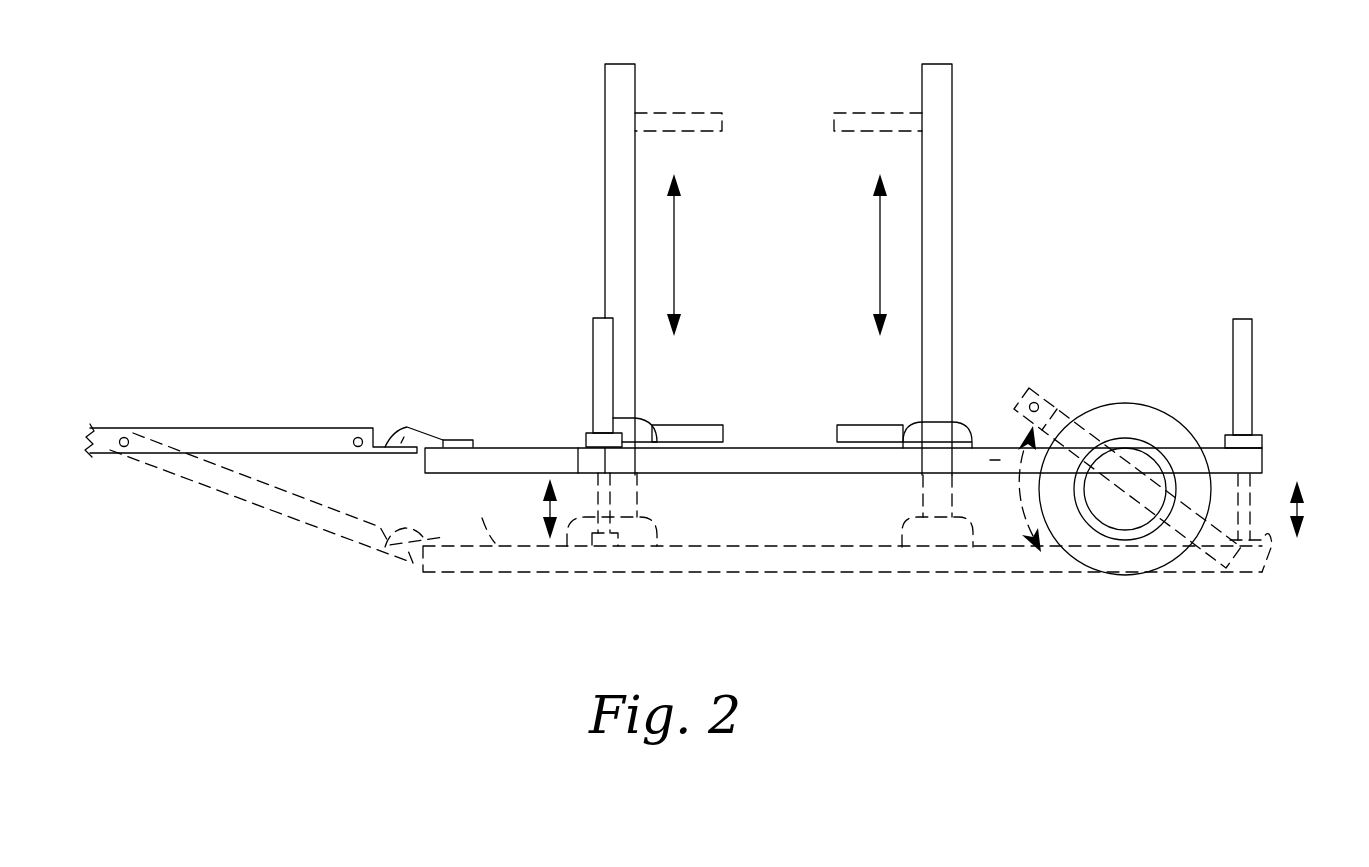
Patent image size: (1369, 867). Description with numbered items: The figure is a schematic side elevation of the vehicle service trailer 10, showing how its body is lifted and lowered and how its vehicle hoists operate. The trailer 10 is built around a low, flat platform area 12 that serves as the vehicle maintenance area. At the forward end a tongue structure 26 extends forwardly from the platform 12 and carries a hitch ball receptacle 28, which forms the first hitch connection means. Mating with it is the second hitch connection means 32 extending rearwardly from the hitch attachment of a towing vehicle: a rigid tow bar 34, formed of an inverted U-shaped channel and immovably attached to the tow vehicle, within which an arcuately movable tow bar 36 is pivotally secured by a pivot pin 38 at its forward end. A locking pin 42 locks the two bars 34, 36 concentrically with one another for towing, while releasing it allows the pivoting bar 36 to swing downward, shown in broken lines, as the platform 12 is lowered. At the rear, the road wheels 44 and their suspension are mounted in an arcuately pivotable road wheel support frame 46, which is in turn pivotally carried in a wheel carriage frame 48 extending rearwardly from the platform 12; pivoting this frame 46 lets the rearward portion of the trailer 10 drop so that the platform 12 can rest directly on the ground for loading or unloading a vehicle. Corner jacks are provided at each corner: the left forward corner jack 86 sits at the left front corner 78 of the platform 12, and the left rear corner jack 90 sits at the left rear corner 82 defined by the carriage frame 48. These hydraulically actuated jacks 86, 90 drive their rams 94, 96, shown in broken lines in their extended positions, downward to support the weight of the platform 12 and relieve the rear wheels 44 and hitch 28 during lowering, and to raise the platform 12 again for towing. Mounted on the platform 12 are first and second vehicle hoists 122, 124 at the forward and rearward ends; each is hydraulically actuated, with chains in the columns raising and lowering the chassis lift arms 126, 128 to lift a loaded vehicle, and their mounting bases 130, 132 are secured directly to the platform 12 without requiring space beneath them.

The trailer 10 is at (903, 616).
The platform area 12 is at (812, 474).
The tongue structure 26 is at (500, 475).
The hitch ball receptacle 28 is at (400, 447).
The second hitch connection means 32 is at (212, 356).
The rigid tow bar 34 is at (232, 428).
The arcuately movable tow bar 36 is at (300, 520).
The pivot pin 38 is at (127, 448).
The locking pin 42 is at (362, 437).
The road wheels 44 is at (1137, 403).
The road wheel support frame 46 is at (1050, 400).
The wheel carriage frame 48 is at (996, 463).
The left front corner 78 is at (572, 447).
The left rear corner 82 is at (1262, 463).
The left forward corner jack 86 is at (593, 345).
The left rear corner jack 90 is at (1252, 330).
The left forward ram 94 is at (567, 546).
The left rearward ram 96 is at (1272, 545).
The first vehicle hoist 122 is at (605, 223).
The second vehicle hoist 124 is at (952, 235).
The chassis lift arm 126 is at (722, 425).
The chassis lift arm 128 is at (853, 425).
The mounting base 130 is at (643, 420).
The mounting base 132 is at (922, 423).